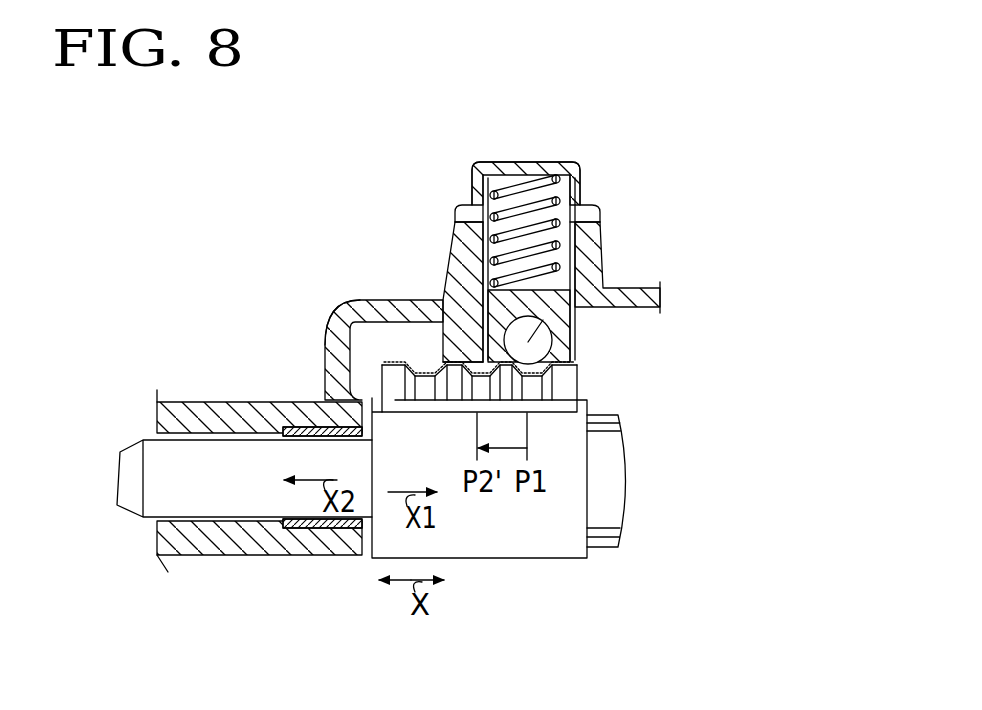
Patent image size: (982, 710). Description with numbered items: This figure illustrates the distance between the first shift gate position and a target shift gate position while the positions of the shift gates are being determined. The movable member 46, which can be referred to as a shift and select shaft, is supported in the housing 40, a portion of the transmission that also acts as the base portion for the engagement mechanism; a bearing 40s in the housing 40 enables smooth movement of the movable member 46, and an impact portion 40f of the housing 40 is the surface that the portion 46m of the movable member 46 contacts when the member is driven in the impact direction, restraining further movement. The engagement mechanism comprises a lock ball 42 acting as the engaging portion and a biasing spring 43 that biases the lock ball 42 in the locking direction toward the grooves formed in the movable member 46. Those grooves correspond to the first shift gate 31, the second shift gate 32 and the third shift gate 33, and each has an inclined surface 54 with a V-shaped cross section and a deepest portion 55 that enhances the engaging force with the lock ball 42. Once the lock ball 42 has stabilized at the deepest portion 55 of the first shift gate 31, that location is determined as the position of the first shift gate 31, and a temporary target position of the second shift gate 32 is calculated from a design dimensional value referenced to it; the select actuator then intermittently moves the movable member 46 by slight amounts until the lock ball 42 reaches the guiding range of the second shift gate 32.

The first shift gate 31 is at (577, 334).
The second shift gate 32 is at (447, 360).
The third shift gate 33 is at (398, 362).
The housing 40 is at (218, 417).
The impact portion 40f is at (322, 370).
The bearing 40s is at (313, 547).
The lock ball 42 is at (590, 288).
The biasing spring 43 is at (578, 170).
The movable member 46 is at (498, 545).
The portion of the movable member 46m is at (347, 302).
The inclined surface 54 is at (412, 378).
The deepest portion 55 is at (435, 378).